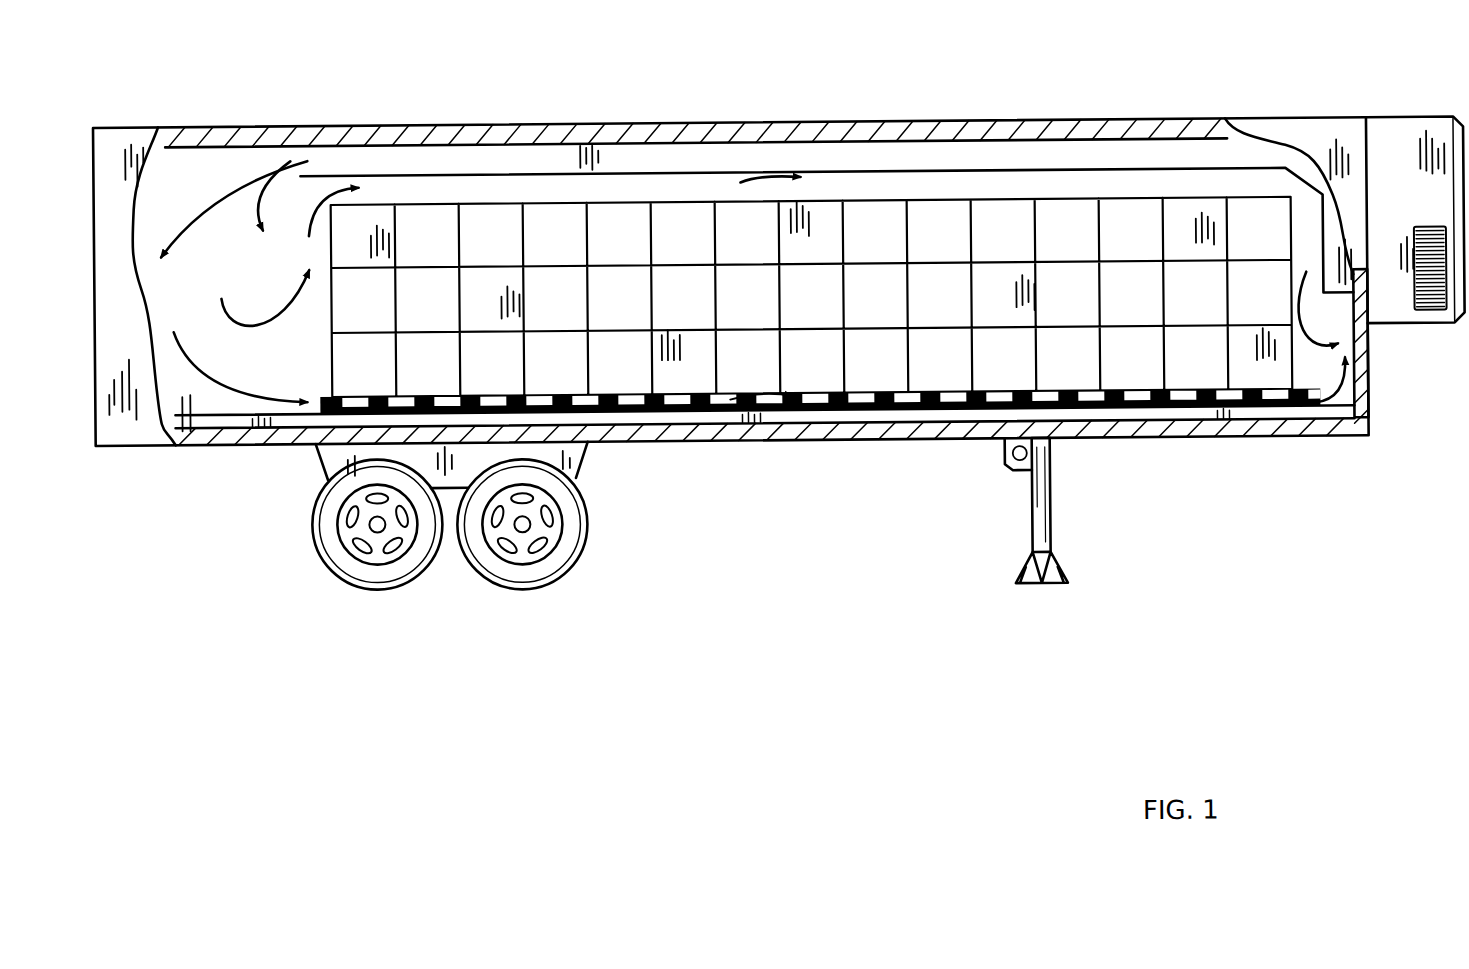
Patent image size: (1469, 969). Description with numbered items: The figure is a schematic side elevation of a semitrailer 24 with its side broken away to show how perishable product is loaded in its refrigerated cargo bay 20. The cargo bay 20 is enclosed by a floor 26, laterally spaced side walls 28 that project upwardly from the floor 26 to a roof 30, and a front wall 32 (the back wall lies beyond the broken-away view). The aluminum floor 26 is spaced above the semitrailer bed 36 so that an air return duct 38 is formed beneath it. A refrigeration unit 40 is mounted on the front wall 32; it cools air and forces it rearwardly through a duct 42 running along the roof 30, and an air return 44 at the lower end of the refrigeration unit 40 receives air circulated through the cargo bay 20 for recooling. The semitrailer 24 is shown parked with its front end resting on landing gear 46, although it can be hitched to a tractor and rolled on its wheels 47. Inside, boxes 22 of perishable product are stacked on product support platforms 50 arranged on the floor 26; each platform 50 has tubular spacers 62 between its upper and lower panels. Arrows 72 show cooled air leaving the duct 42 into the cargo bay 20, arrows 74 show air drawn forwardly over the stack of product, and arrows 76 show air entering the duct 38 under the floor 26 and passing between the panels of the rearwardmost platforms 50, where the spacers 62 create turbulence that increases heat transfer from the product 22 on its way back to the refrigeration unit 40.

The refrigerated cargo bay 20 is at (208, 392).
The boxes of perishable product 22 is at (1003, 228).
The semitrailer 24 is at (554, 99).
The floor 26 is at (170, 408).
The side walls 28 is at (112, 152).
The roof 30 is at (1040, 148).
The front wall 32 is at (1364, 438).
The semitrailer bed 36 is at (648, 424).
The air return duct 38 is at (878, 424).
The refrigeration unit 40 is at (1395, 128).
The duct 42 is at (1112, 160).
The air return 44 is at (1353, 342).
The landing gear 46 is at (1050, 521).
The wheels 47 is at (468, 570).
The product support platforms 50 is at (440, 388).
The tubular spacers 62 is at (1176, 404).
The arrows (cooled air flow) 72 is at (190, 172).
The arrows (air over product) 74 is at (343, 172).
The arrows (return air flow) 76 is at (255, 395).